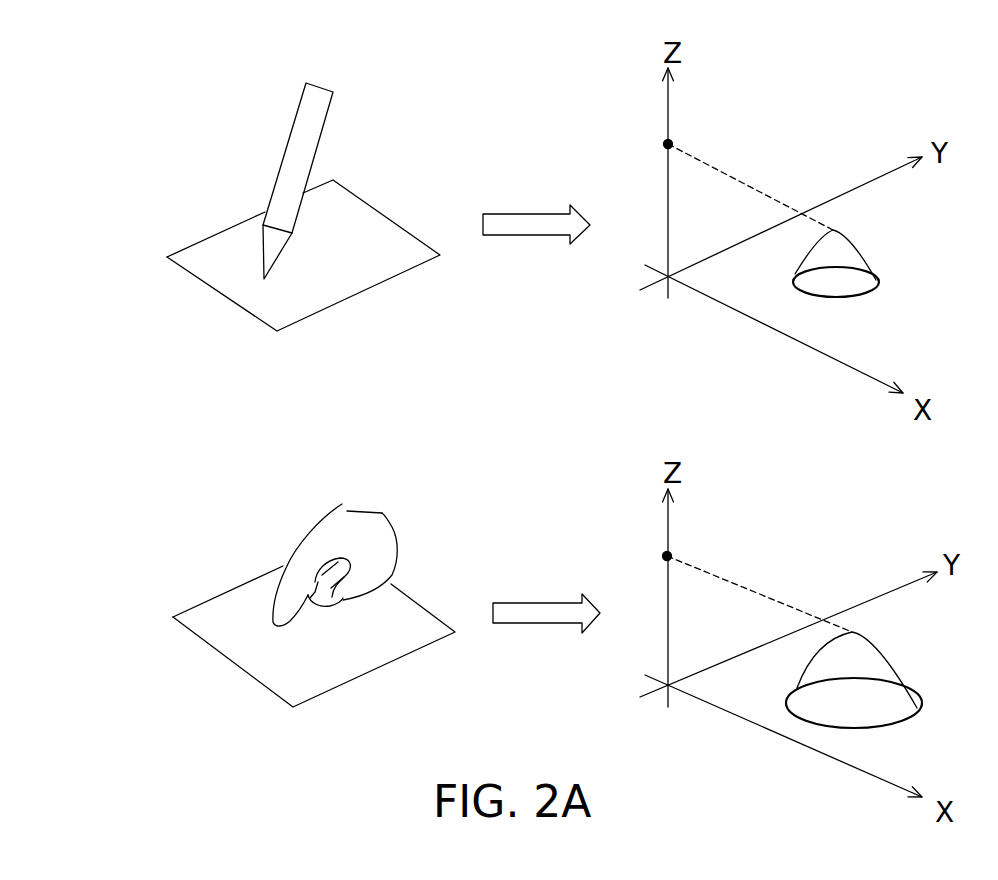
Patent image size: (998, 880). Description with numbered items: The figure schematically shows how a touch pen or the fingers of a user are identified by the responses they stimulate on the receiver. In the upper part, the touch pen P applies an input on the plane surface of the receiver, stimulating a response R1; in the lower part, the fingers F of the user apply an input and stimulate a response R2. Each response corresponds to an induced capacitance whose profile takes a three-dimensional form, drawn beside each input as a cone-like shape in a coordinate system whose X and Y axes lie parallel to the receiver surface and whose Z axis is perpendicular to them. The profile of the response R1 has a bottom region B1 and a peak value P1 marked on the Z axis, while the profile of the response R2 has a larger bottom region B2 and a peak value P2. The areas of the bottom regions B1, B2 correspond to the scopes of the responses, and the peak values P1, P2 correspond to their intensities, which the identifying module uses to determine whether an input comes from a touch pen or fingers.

The touch pen P is at (330, 110).
The peak value P1 is at (725, 183).
The response R1 is at (872, 255).
The bottom region B1 is at (842, 283).
The fingers F is at (382, 513).
The peak value P2 is at (734, 589).
The response R2 is at (915, 665).
The bottom region B2 is at (877, 693).